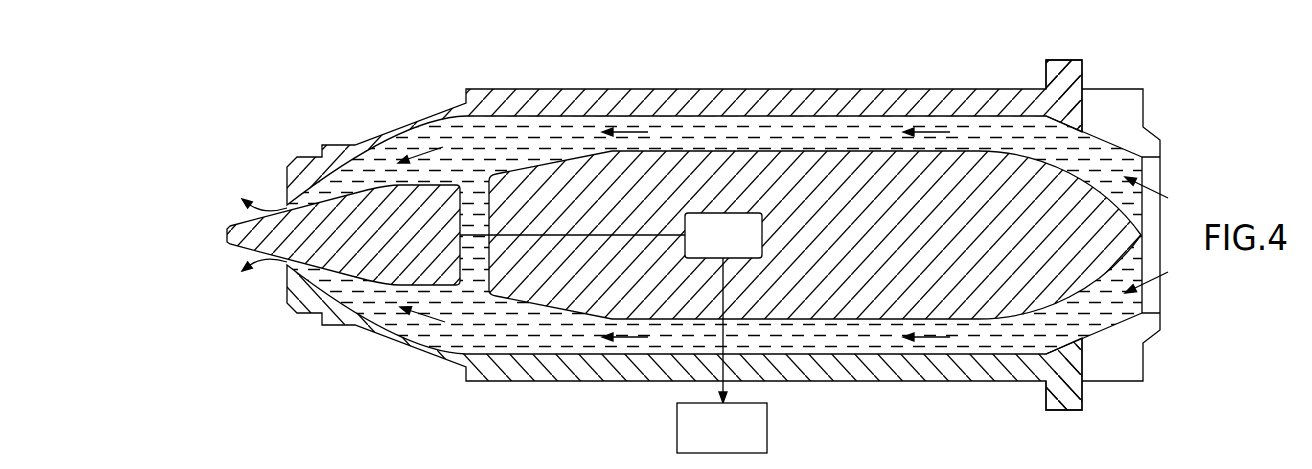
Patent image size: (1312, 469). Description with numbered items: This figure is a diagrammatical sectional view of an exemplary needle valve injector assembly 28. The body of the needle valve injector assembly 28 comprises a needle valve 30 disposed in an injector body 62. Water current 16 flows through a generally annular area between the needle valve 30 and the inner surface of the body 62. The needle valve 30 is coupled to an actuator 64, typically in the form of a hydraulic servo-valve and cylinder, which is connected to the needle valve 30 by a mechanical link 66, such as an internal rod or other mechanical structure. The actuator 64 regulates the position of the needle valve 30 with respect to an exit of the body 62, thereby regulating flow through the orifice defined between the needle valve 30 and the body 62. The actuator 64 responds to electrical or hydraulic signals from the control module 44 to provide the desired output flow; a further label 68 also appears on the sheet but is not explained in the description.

The needle valve injector assembly 28 is at (192, 121).
The water current 16 is at (442, 135).
The needle valve 30 is at (240, 245).
The injector body 62 is at (1083, 73).
The actuator 64 is at (736, 246).
The mechanical link 66 is at (474, 238).
The control module 44 is at (767, 428).
The fuel supply line 68 is at (965, 465).